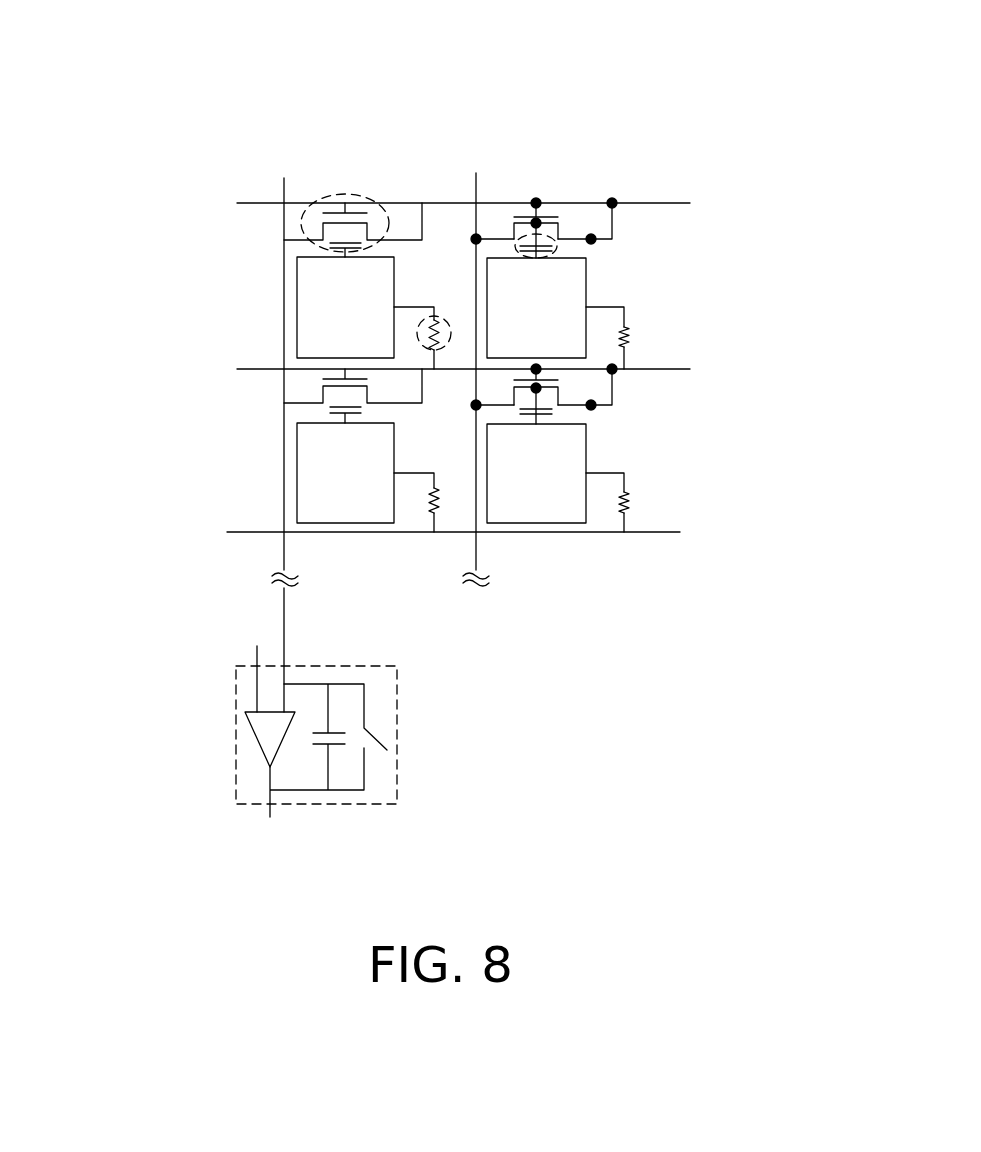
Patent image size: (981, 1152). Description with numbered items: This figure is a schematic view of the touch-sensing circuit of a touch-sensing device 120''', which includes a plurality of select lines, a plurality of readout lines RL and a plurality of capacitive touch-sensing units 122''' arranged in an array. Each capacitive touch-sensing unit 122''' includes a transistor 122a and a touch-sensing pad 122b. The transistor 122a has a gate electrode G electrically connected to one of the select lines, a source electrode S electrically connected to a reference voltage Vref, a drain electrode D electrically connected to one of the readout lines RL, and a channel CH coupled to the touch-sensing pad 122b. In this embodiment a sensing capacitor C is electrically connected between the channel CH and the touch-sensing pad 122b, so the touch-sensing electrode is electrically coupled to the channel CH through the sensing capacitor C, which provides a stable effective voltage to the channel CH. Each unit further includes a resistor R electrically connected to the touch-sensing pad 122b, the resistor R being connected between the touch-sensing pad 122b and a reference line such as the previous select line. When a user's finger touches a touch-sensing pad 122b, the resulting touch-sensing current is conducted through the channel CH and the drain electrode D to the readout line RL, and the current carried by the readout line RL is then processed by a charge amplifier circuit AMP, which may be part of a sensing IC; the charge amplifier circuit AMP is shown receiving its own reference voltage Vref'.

The touch-sensing device 120''' is at (754, 686).
The capacitive touch-sensing unit 122''' is at (453, 271).
The transistor 122a is at (333, 193).
The touch-sensing pad 122b is at (377, 270).
The resistor R is at (443, 316).
The readout line RL is at (284, 282).
The reference voltage Vref is at (489, 203).
The amplifier reference voltage input Vref' is at (243, 658).
The drain electrode D is at (477, 238).
The gate electrode G is at (536, 203).
The channel CH is at (559, 225).
The source electrode S is at (591, 239).
The sensing capacitor C is at (558, 246).
The charge amplifier circuit AMP is at (400, 750).